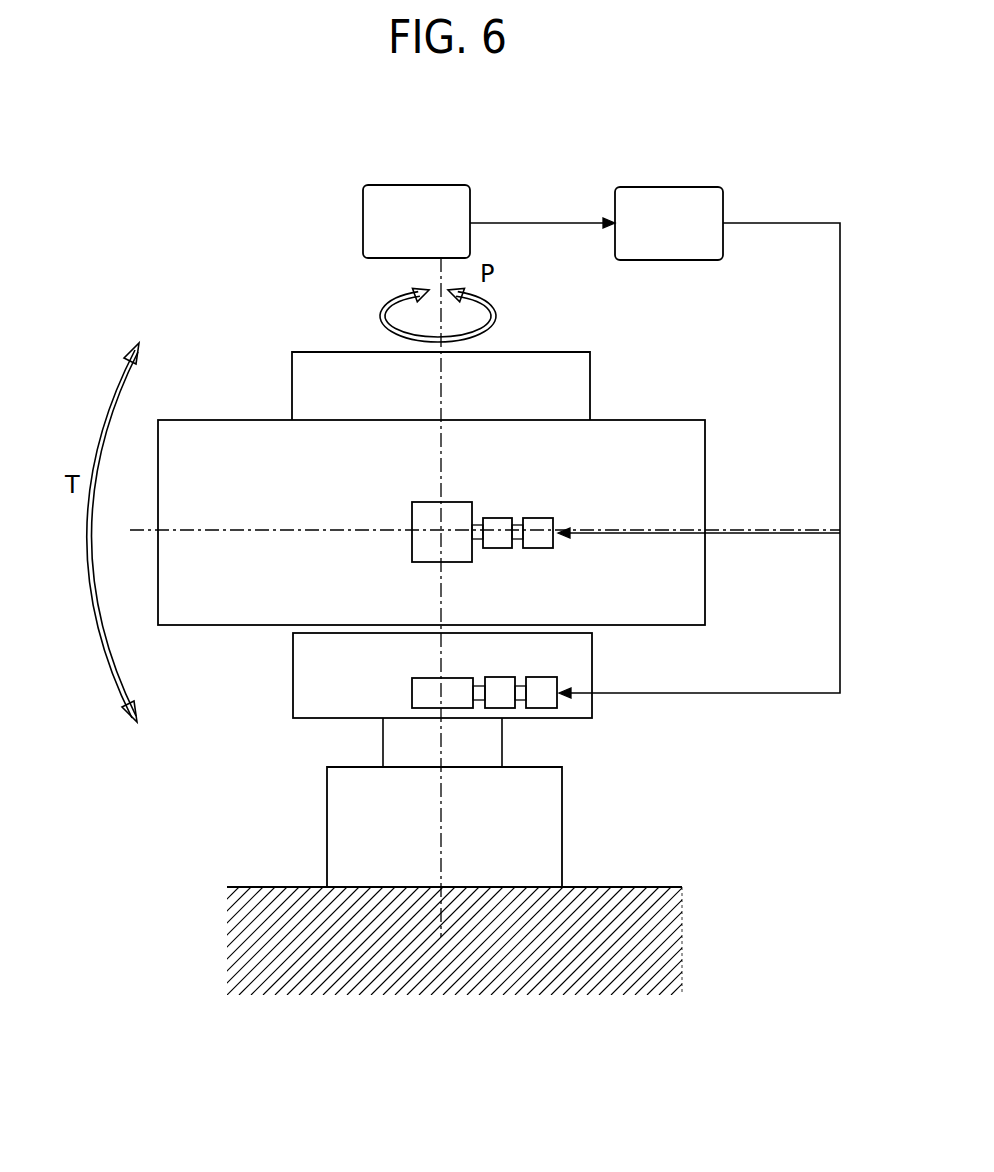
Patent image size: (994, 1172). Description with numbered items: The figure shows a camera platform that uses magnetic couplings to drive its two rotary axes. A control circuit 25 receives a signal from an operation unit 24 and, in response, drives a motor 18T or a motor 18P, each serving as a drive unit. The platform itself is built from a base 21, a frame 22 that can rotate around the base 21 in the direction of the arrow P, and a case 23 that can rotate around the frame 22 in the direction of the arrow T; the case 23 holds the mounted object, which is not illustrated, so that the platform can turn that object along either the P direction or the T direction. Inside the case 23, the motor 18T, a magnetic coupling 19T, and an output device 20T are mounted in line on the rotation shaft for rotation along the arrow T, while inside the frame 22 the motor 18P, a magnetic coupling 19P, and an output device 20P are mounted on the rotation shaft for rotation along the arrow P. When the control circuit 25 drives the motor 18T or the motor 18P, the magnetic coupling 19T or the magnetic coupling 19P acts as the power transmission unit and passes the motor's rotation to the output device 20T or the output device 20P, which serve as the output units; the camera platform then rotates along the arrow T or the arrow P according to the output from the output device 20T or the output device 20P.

The motor 18T is at (540, 516).
The magnetic coupling 19T is at (500, 548).
The output device 20T is at (460, 502).
The motor 18P is at (543, 698).
The magnetic coupling 19P is at (497, 677).
The output device 20P is at (458, 701).
The base 21 is at (543, 867).
The frame 22 is at (318, 669).
The case 23 is at (212, 433).
The operation unit 24 is at (424, 185).
The control circuit 25 is at (681, 187).